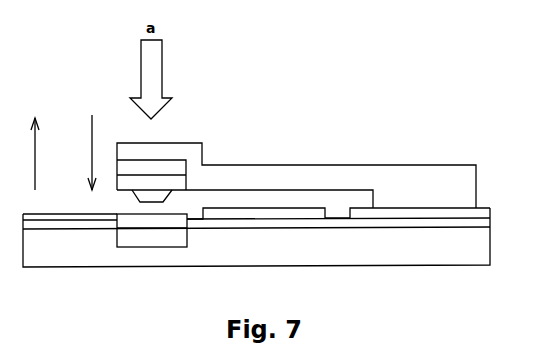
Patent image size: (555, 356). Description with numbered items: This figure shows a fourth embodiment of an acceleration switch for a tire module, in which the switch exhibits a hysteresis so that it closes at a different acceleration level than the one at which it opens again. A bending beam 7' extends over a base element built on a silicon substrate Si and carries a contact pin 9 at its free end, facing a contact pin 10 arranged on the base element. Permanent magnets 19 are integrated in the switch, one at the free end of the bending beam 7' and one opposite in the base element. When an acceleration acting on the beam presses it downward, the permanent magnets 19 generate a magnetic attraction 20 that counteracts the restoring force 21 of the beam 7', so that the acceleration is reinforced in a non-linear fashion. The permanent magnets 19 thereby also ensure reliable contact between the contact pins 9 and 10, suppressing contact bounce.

The bending beam 7' is at (296, 154).
The contact pin 9 is at (140, 208).
The contact pin 10 is at (140, 213).
The permanent magnets 19 is at (172, 167).
The magnetic attraction 20 is at (93, 143).
The restoring force 21 is at (35, 143).
The silicon substrate Si is at (256, 237).